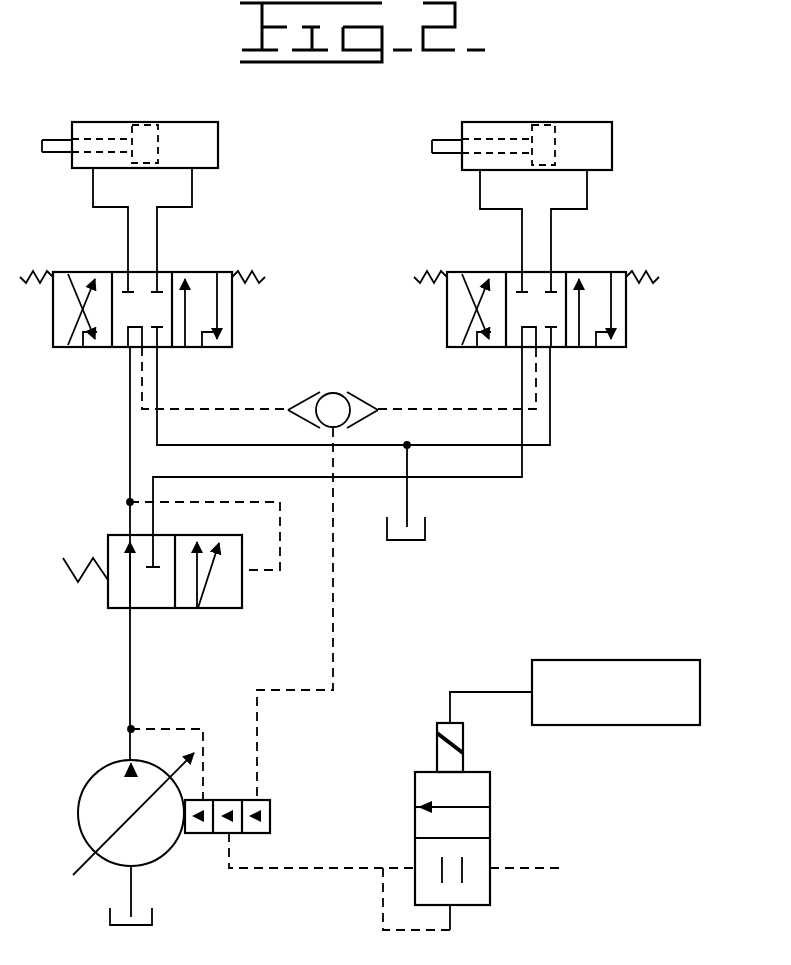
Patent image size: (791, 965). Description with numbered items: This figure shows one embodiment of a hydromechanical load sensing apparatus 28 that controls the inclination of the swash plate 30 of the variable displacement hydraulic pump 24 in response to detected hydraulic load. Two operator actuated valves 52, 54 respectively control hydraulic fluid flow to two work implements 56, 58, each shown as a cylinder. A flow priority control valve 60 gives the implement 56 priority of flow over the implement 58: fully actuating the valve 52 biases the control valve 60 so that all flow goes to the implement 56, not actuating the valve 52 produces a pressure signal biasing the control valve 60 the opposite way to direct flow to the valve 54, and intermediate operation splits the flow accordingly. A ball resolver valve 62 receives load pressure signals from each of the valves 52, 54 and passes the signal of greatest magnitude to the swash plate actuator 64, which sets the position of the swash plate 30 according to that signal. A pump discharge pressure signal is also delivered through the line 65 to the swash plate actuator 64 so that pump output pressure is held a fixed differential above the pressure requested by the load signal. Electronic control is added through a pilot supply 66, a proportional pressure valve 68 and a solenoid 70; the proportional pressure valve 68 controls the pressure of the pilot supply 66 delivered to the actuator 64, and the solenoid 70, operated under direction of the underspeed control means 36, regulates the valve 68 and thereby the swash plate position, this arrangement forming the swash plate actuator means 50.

The variable displacement hydraulic pump 24 is at (102, 775).
The hydromechanical load sensing apparatus 28 is at (452, 592).
The swash plate 30 is at (82, 860).
The underspeed control means 36 is at (597, 660).
The swash plate actuator means 50 is at (426, 737).
The operator actuated valve 52 is at (200, 272).
The operator actuated valve 54 is at (588, 272).
The work implement 56 is at (190, 122).
The work implement 58 is at (563, 122).
The flow priority control valve 60 is at (242, 597).
The ball resolver valve 62 is at (333, 393).
The swash plate actuator 64 is at (270, 807).
The line 65 is at (157, 713).
The pilot supply 66 is at (609, 835).
The proportional pressure valve 68 is at (490, 798).
The solenoid 70 is at (463, 743).